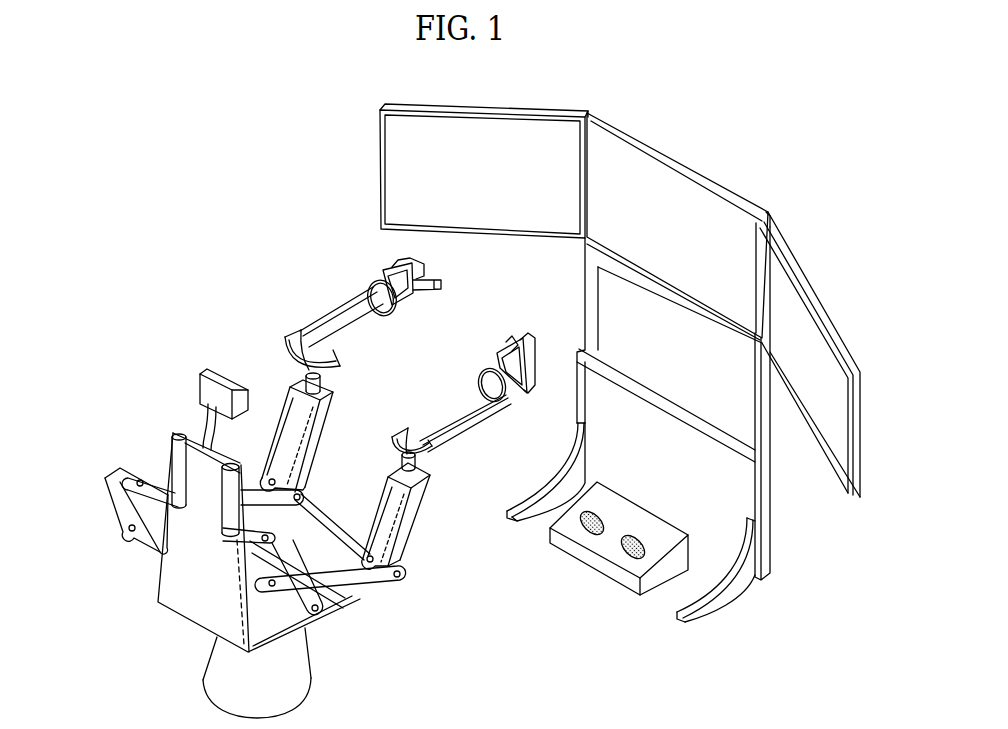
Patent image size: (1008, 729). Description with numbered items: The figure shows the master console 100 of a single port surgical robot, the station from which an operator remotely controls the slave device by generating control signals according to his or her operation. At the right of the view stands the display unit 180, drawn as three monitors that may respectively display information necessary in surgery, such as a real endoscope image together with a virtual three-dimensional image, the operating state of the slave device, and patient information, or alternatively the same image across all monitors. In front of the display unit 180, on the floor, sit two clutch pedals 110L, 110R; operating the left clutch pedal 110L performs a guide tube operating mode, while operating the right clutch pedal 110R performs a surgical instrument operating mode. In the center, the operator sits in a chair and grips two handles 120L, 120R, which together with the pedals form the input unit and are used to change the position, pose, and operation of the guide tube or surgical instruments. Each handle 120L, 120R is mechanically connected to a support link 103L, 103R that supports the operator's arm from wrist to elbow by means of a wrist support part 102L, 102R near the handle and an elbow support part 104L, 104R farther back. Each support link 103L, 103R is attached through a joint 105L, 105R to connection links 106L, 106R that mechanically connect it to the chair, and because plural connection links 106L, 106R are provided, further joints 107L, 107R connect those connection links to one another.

The master console 100 is at (200, 193).
The display unit 180 is at (674, 164).
The left handle 120L is at (397, 255).
The right handle 120R is at (516, 333).
The left wrist support part 102L is at (371, 284).
The right wrist support part 102R is at (478, 373).
The left support link 103L is at (317, 315).
The right support link 103R is at (458, 422).
The left elbow support part 104L is at (302, 350).
The right elbow support part 104R is at (407, 438).
The left joint 105L is at (306, 377).
The right joint 105R is at (404, 461).
The left connection link 106L is at (285, 405).
The right connection link 106R is at (400, 552).
The left joint connecting connection links 107L is at (301, 498).
The right joint connecting connection links 107R is at (398, 582).
The left clutch pedal 110L is at (592, 511).
The right clutch pedal 110R is at (628, 528).